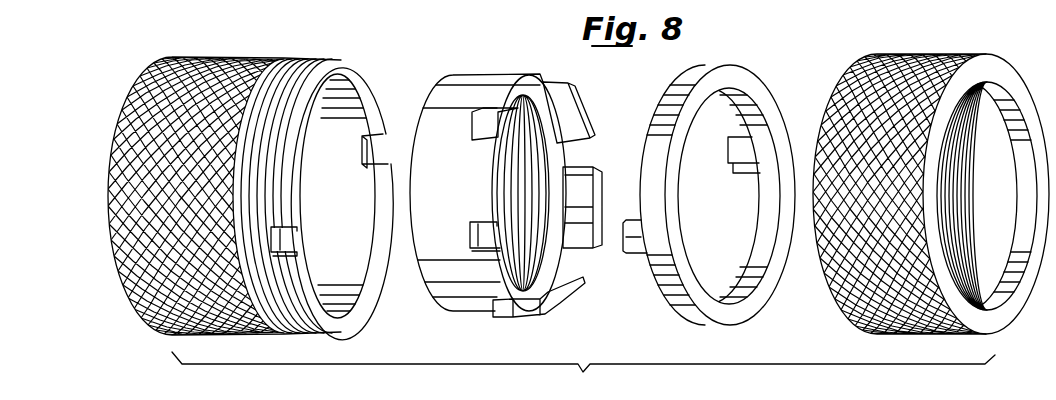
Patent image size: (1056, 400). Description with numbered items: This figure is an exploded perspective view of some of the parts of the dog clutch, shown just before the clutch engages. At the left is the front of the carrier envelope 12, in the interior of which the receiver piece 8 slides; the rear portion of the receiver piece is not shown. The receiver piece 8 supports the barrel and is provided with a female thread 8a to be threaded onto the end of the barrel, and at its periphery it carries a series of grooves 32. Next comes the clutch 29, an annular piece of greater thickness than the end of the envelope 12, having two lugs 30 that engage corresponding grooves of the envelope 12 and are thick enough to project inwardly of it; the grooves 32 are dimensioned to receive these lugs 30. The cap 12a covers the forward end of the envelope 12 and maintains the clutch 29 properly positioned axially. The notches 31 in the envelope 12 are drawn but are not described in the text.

The carrier envelope 12 is at (231, 56).
The cap 12a is at (951, 60).
The receiver piece 8 is at (462, 295).
The female thread 8a is at (543, 280).
The clutch 29 is at (683, 313).
The lugs 30 is at (740, 173).
The notch in cap ring 31 is at (383, 147).
The grooves 32 is at (499, 110).